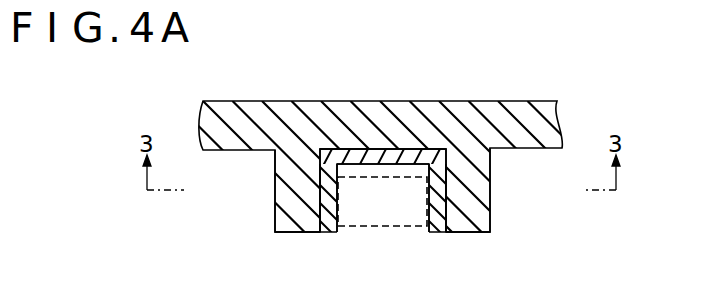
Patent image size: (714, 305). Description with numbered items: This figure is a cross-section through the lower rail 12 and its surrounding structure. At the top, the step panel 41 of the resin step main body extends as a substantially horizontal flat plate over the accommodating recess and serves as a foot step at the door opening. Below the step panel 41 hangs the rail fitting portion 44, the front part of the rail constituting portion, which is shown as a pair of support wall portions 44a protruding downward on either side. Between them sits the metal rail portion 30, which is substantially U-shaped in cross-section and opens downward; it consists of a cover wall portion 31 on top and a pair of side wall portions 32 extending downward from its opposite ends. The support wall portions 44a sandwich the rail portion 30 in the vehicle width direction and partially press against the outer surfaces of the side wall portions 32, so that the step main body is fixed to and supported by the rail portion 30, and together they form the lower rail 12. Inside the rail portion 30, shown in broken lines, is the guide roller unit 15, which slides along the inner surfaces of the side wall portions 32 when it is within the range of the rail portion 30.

The step panel 41 is at (515, 103).
The rail fitting portion 44 is at (490, 166).
The support wall portion 44a is at (275, 220).
The rail portion 30 is at (410, 153).
The cover wall portion 31 is at (355, 152).
The side wall portion 32 is at (330, 232).
The guide roller unit 15 is at (356, 227).
The lower rail 12 is at (285, 245).